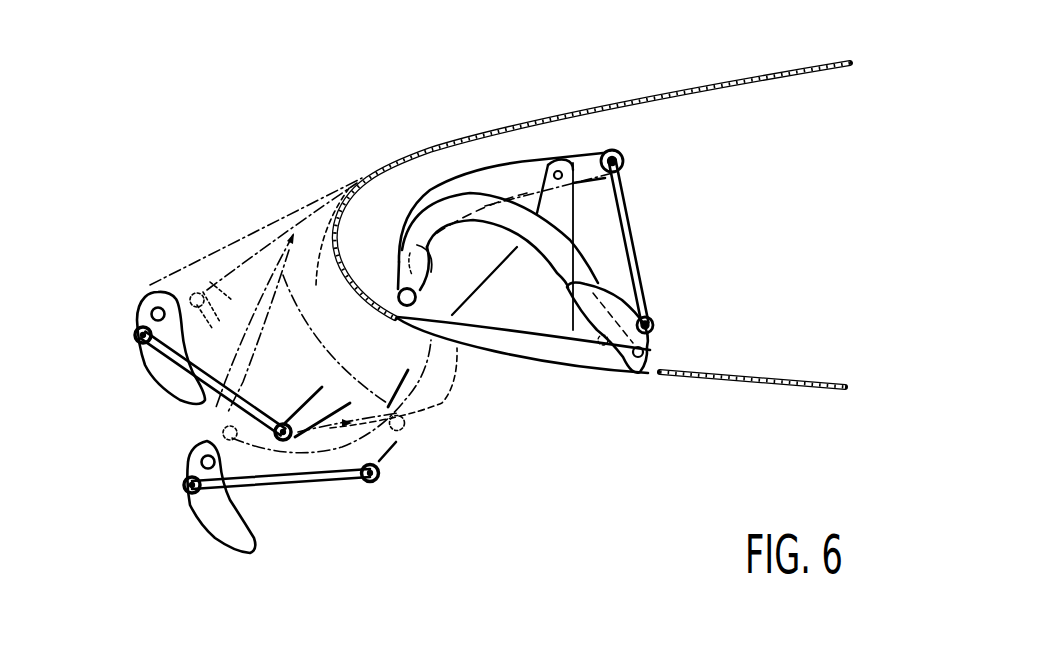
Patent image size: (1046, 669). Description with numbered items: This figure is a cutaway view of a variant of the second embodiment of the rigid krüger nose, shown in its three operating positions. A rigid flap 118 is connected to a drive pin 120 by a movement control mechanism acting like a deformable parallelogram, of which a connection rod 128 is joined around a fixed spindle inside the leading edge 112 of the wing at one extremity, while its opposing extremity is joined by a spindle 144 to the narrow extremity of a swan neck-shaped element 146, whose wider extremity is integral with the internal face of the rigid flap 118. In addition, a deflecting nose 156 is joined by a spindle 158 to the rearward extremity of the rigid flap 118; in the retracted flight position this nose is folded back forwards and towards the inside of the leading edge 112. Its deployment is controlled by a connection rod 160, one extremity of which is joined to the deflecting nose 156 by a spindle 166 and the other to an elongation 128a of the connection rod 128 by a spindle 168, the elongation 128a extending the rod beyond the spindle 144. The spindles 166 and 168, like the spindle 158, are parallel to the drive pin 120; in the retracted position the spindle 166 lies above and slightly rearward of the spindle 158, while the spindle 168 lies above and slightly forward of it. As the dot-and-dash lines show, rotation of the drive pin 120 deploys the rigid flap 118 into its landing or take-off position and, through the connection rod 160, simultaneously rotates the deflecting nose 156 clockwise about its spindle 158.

The leading edge 112 is at (777, 62).
The rigid flap 118 is at (568, 355).
The drive pin 120 is at (400, 317).
The connection rod 128 is at (477, 181).
The elongation 128a is at (606, 150).
The spindle 144 is at (553, 165).
The swan neck-shaped element 146 is at (524, 311).
The deflecting nose 156 is at (622, 297).
The spindle 158 is at (637, 375).
The connection rod 160 is at (638, 222).
The spindle 166 is at (656, 322).
The spindle 168 is at (627, 163).